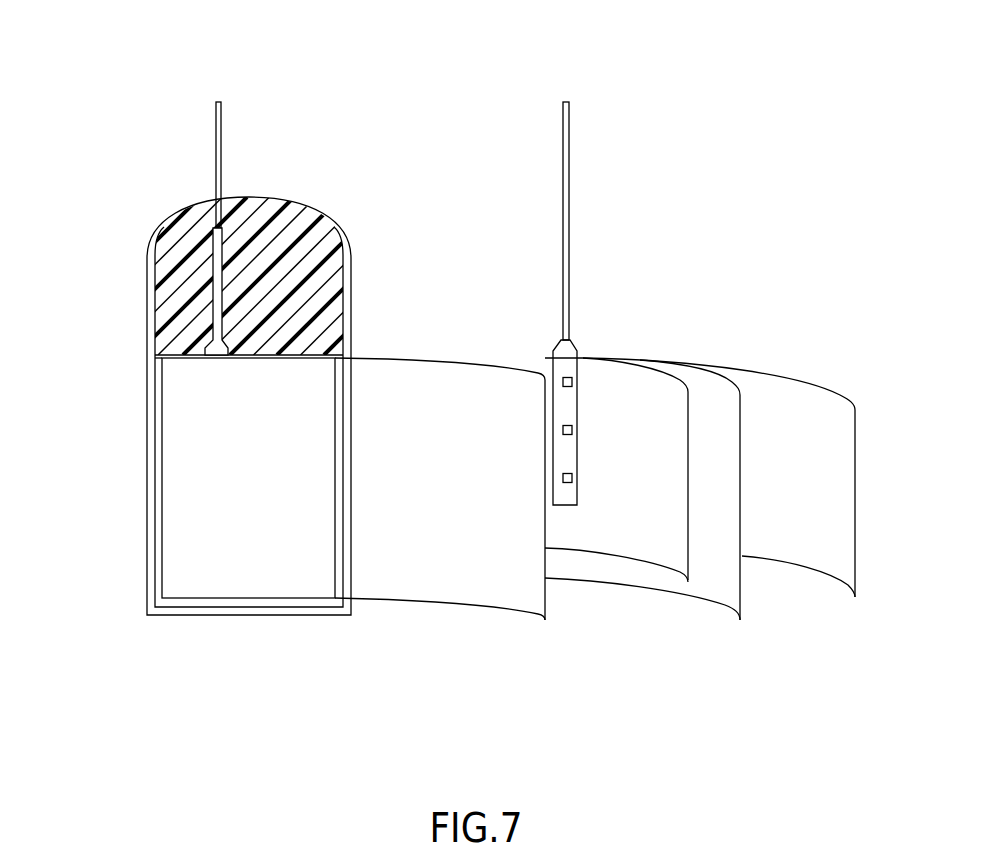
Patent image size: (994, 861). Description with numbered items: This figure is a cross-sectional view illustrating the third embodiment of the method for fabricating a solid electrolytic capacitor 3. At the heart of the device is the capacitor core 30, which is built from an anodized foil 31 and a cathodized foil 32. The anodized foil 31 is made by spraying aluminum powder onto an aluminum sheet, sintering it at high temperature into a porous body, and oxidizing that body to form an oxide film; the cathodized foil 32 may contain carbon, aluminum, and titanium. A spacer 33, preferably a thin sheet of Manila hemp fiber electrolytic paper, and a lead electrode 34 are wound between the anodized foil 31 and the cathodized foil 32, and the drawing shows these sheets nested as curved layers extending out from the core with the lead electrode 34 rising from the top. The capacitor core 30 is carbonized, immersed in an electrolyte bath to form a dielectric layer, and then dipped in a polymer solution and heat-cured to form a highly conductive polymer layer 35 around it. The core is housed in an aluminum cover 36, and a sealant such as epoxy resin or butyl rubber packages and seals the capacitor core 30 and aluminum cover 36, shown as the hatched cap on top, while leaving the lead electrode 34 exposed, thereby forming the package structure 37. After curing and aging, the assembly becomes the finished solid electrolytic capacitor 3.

The solid electrolytic capacitor 3 is at (693, 43).
The capacitor core 30 is at (287, 66).
The anodized foil 31 is at (634, 287).
The cathodized foil 32 is at (789, 300).
The spacer 33 is at (588, 563).
The lead electrode 34 is at (220, 153).
The polymer layer 35 is at (158, 450).
The aluminum cover 36 is at (147, 535).
The package structure 37 is at (187, 242).